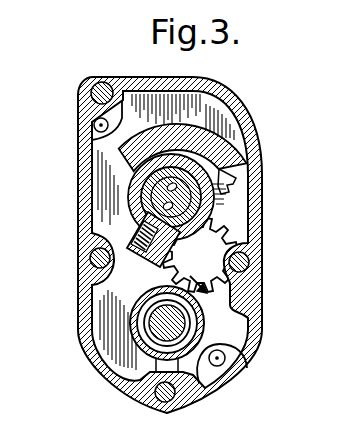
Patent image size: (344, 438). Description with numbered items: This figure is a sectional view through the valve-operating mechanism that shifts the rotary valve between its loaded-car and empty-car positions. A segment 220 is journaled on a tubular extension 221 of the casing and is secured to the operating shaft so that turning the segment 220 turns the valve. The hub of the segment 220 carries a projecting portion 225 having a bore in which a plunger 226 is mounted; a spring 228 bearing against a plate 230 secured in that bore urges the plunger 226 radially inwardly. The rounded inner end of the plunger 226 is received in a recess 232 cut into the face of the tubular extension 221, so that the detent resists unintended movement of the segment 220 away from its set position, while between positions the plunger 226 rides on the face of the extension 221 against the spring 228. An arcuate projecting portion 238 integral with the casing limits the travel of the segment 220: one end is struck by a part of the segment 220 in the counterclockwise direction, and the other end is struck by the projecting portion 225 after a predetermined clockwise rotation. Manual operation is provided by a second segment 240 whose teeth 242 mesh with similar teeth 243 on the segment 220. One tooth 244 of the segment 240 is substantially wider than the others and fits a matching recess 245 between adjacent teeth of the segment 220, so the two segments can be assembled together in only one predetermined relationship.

The segment 220 is at (214, 188).
The tubular extension 221 is at (205, 167).
The projecting portion 225 is at (127, 223).
The plunger 226 is at (125, 212).
The spring 228 is at (135, 245).
The plate 230 is at (92, 257).
The recess 232 is at (133, 180).
The arcuate projecting portion 238 is at (225, 143).
The segment 240 is at (230, 327).
The teeth 242 is at (213, 278).
The teeth 243 is at (228, 215).
The tooth 244 is at (258, 266).
The recess 245 is at (213, 232).